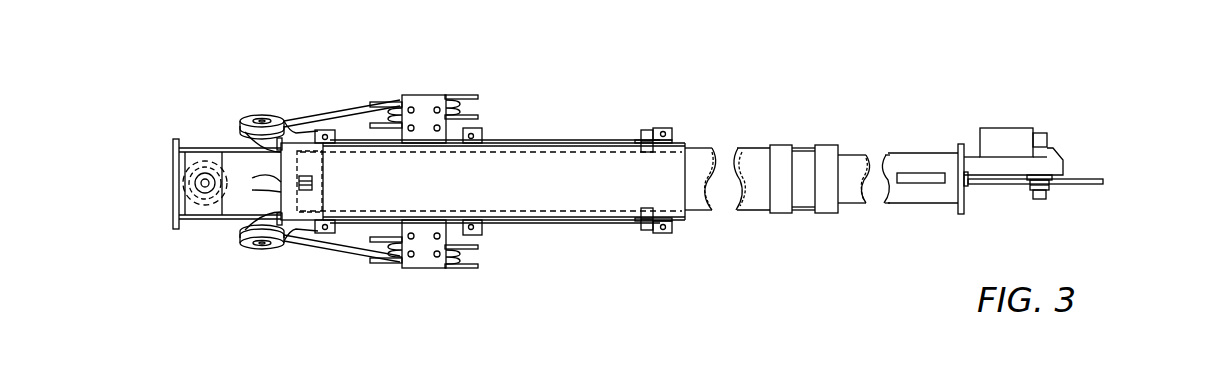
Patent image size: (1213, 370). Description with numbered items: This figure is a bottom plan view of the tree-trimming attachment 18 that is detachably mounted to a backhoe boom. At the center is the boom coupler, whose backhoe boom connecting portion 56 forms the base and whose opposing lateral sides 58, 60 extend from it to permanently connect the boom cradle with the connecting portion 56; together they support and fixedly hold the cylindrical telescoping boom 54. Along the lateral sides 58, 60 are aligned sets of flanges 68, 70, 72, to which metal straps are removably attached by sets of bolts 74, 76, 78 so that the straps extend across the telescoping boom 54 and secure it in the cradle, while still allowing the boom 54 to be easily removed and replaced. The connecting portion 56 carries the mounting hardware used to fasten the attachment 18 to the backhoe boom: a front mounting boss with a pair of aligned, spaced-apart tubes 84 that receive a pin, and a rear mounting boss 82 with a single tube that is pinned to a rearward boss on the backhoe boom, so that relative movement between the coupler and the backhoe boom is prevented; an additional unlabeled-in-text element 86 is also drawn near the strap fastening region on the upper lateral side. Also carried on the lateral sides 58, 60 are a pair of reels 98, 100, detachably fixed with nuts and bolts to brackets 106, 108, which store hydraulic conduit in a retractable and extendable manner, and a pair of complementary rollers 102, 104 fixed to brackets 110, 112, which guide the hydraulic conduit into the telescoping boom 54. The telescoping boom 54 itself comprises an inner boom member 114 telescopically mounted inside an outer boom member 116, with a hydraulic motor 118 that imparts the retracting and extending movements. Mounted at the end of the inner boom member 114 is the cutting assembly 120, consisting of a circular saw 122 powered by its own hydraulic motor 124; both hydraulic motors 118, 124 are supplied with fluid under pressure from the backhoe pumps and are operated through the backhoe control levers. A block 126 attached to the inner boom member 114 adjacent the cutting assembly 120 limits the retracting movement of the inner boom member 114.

The tree-trimming attachment 18 is at (533, 76).
The telescoping boom 54 is at (712, 138).
The backhoe boom connecting portion 56 is at (560, 173).
The lateral side 58 is at (598, 140).
The lateral side 60 is at (580, 221).
The flanges 68 is at (664, 132).
The flanges 70 is at (482, 135).
The flanges 72 is at (323, 131).
The bolts 74 is at (653, 130).
The bolts 76 is at (472, 112).
The bolts 78 is at (327, 136).
The rear mounting boss 82 is at (252, 180).
The tubes 84 is at (640, 222).
The upper clamp block 86 is at (637, 140).
The reel 98 is at (372, 102).
The reel 100 is at (381, 262).
The roller 102 is at (247, 117).
The roller 104 is at (245, 252).
The bracket 106 is at (422, 100).
The bracket 108 is at (423, 262).
The bracket 110 is at (295, 115).
The bracket 112 is at (293, 242).
The inner boom member 114 is at (856, 160).
The outer boom member 116 is at (753, 155).
The hydraulic motor 118 is at (198, 157).
The cutting assembly 120 is at (1074, 126).
The circular saw 122 is at (1090, 180).
The hydraulic motor 124 is at (1003, 138).
The block 126 is at (917, 175).